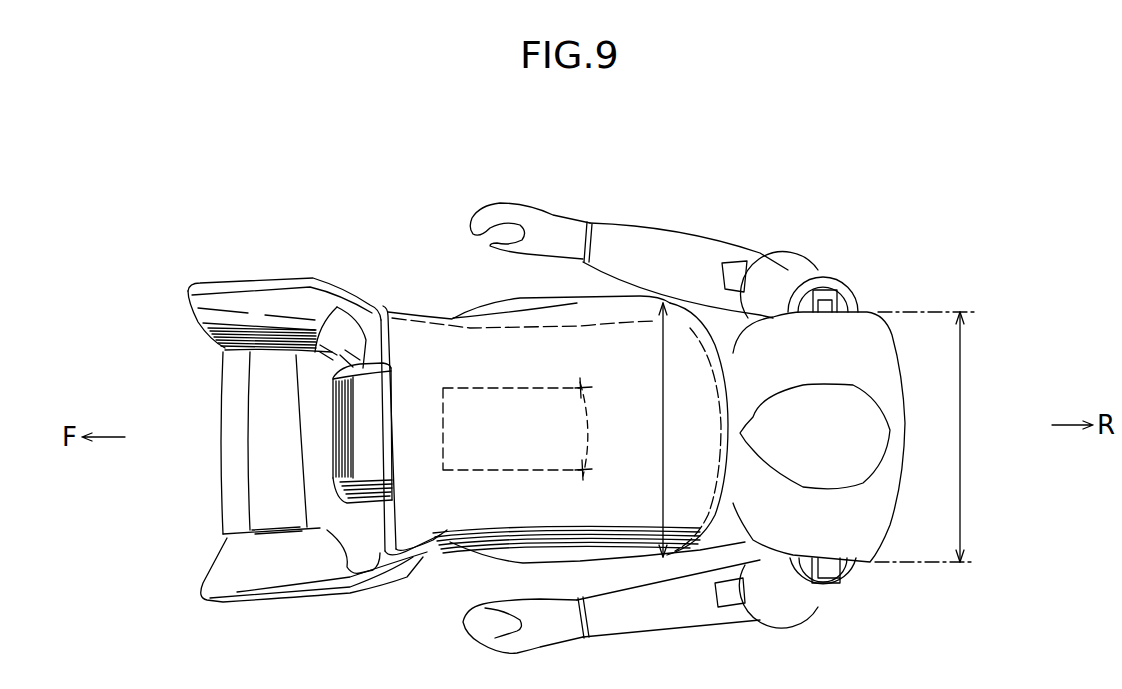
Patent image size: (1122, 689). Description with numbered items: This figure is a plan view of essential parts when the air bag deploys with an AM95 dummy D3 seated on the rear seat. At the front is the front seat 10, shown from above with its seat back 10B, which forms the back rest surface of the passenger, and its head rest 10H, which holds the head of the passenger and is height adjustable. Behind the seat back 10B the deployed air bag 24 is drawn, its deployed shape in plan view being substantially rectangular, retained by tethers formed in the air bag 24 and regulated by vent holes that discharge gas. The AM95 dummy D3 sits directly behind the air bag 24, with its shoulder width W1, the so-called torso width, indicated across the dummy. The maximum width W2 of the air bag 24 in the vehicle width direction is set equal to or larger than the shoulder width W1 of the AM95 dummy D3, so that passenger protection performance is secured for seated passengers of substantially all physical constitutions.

The front seat 10 is at (247, 262).
The seat back 10B is at (222, 391).
The head rest 10H is at (375, 436).
The air bag 24 is at (453, 318).
The AM95 dummy D3 is at (791, 252).
The shoulder width W1 is at (963, 388).
The maximum width W2 is at (658, 381).